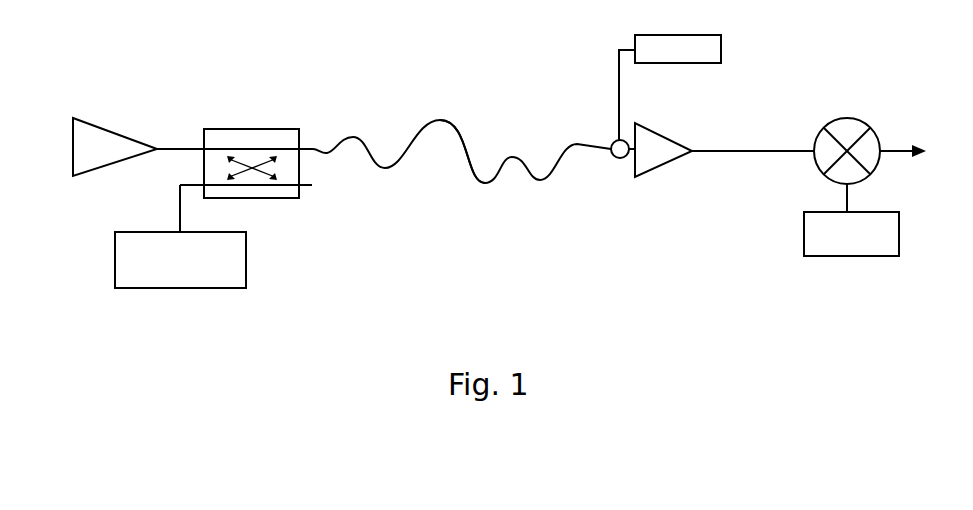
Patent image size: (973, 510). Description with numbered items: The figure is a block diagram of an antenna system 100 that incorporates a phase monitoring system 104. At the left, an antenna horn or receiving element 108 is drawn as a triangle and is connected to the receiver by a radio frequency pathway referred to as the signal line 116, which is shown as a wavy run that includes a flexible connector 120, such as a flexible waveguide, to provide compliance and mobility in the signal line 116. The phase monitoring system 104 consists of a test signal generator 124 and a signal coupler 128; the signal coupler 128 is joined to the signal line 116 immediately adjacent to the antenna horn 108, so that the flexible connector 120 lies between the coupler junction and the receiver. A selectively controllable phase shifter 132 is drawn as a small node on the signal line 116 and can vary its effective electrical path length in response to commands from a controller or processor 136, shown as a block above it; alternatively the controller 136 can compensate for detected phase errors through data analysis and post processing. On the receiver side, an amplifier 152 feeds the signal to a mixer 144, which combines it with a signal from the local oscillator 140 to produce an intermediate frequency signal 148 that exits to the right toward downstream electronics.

The antenna system 100 is at (340, 93).
The phase monitoring system 104 is at (500, 207).
The antenna horn or receiving element 108 is at (115, 122).
The signal line 116 is at (462, 183).
The flexible connector 120 is at (510, 176).
The test signal generator 124 is at (215, 260).
The signal coupler 128 is at (246, 150).
The selectively controllable phase shifter 132 is at (598, 117).
The controller or processor 136 is at (707, 87).
The local oscillator 140 is at (815, 236).
The mixer 144 is at (870, 133).
The intermediate frequency signal 148 is at (925, 184).
The amplifier 152 is at (671, 127).